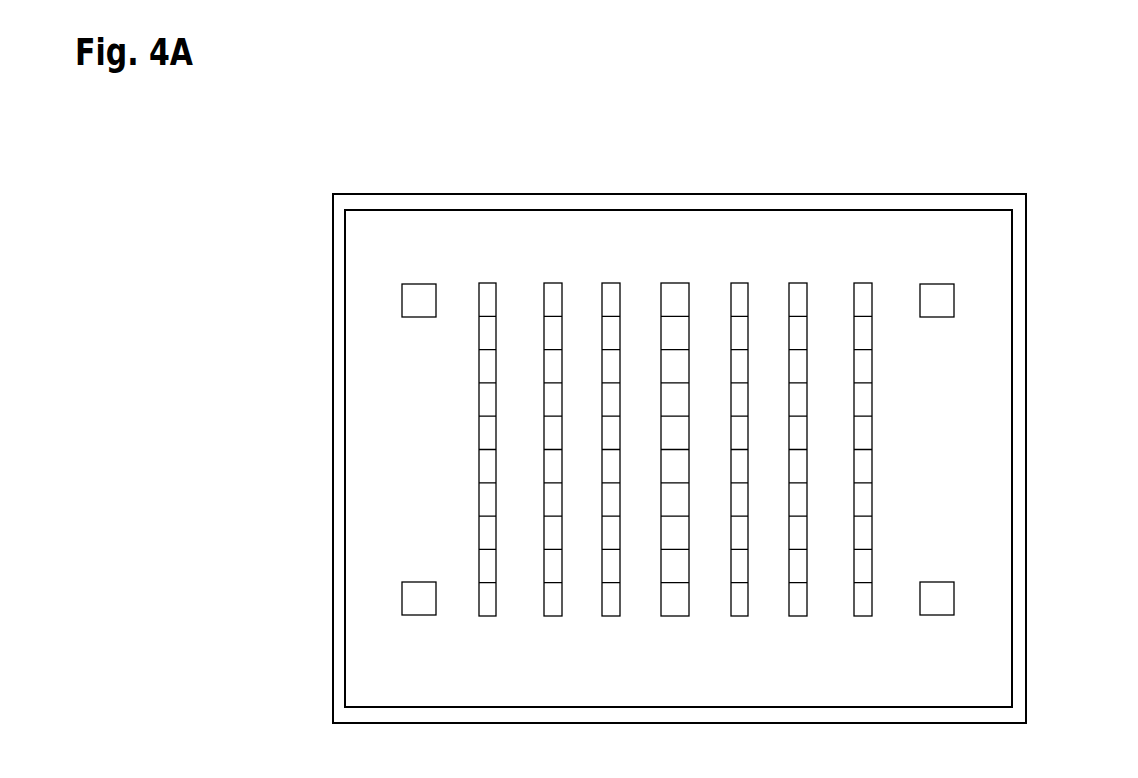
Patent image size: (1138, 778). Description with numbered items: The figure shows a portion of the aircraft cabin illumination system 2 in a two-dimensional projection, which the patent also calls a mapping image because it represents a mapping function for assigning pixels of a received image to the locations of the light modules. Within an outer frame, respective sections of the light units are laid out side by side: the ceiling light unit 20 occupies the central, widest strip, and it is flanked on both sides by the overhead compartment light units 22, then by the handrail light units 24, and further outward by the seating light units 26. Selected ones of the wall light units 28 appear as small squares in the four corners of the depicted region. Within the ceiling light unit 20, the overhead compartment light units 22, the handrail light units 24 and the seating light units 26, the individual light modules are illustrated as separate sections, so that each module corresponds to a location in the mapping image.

The aircraft cabin illumination system 2 is at (1052, 182).
The ceiling light unit 20 is at (674, 302).
The overhead compartment light units 22 is at (612, 303).
The handrail light units 24 is at (552, 305).
The seating light units 26 is at (487, 307).
The wall light units 28 is at (416, 300).